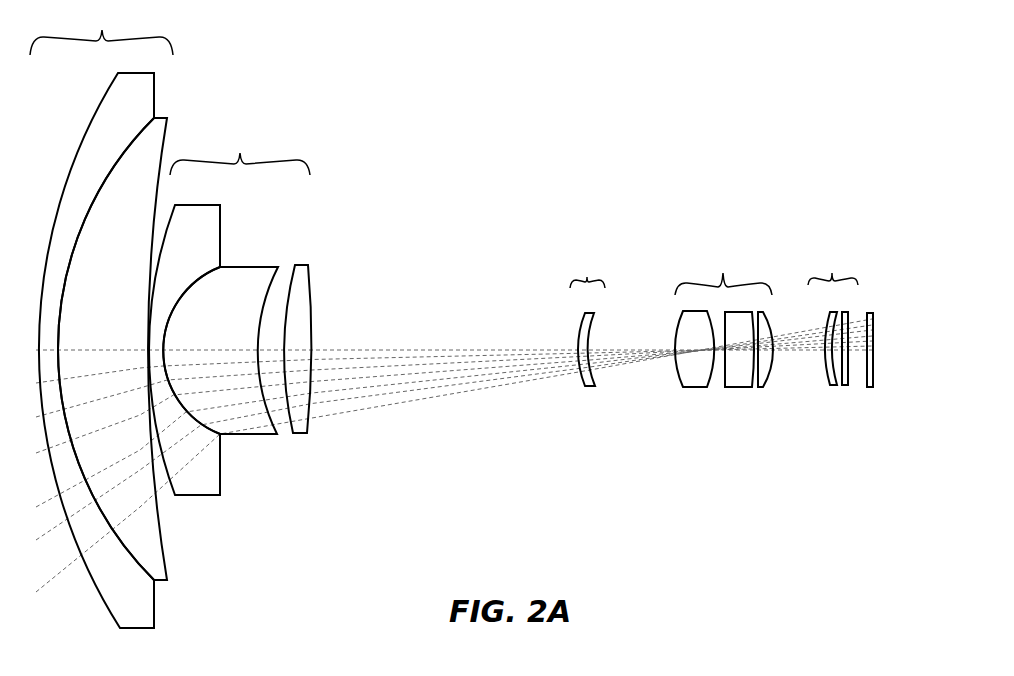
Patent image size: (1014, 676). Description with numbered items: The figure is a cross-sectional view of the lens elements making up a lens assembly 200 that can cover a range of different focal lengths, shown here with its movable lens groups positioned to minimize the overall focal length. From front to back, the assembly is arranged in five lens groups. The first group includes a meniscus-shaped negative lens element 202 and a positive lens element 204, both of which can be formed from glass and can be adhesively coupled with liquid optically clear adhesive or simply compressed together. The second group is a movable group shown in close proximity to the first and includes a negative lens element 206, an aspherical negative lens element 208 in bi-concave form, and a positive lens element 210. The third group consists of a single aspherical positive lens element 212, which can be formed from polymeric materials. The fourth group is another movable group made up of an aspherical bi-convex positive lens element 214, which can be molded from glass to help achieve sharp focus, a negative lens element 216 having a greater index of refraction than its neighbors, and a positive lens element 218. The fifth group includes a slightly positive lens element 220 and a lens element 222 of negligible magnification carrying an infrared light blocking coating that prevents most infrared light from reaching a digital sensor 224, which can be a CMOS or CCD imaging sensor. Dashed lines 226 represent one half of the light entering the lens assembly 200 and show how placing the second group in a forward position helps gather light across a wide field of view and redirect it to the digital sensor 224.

The lens assembly 200 is at (840, 112).
The meniscus-shaped negative lens element 202 is at (103, 134).
The positive lens element 204 is at (115, 194).
The negative lens element 206 is at (177, 257).
The aspherical negative lens element 208 is at (235, 291).
The positive lens element 210 is at (298, 263).
The aspherical positive lens element 212 is at (580, 323).
The aspherical positive lens element 214 is at (692, 387).
The negative lens element 216 is at (742, 387).
The positive lens element 218 is at (765, 387).
The slightly positive lens element 220 is at (835, 386).
The lens element with infrared light blocking coating 222 is at (843, 388).
The digital sensor 224 is at (870, 310).
The dashed lines 226 is at (397, 402).